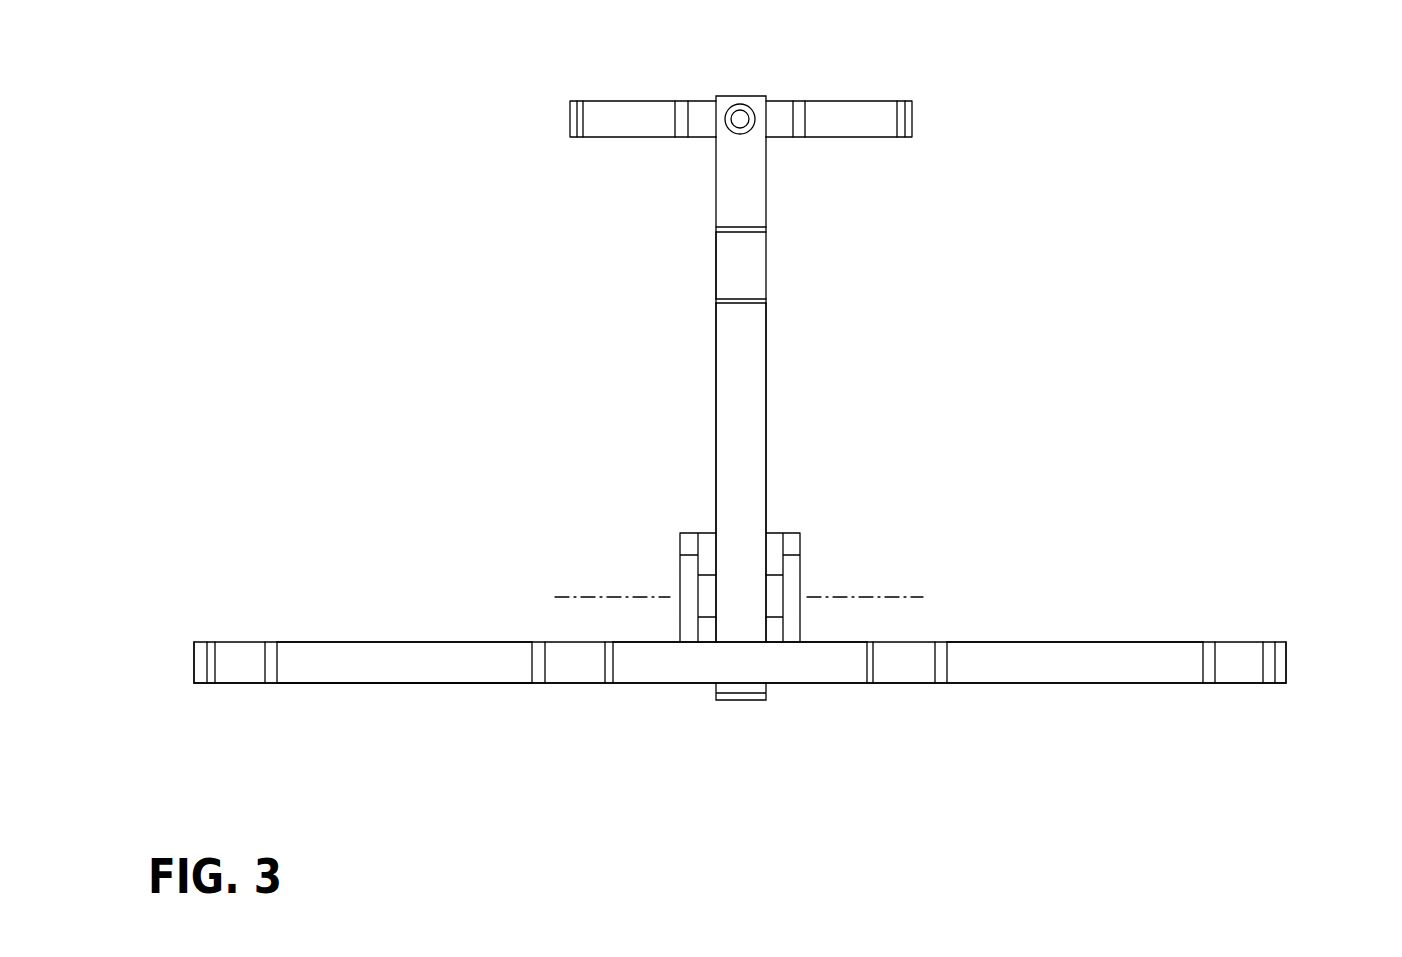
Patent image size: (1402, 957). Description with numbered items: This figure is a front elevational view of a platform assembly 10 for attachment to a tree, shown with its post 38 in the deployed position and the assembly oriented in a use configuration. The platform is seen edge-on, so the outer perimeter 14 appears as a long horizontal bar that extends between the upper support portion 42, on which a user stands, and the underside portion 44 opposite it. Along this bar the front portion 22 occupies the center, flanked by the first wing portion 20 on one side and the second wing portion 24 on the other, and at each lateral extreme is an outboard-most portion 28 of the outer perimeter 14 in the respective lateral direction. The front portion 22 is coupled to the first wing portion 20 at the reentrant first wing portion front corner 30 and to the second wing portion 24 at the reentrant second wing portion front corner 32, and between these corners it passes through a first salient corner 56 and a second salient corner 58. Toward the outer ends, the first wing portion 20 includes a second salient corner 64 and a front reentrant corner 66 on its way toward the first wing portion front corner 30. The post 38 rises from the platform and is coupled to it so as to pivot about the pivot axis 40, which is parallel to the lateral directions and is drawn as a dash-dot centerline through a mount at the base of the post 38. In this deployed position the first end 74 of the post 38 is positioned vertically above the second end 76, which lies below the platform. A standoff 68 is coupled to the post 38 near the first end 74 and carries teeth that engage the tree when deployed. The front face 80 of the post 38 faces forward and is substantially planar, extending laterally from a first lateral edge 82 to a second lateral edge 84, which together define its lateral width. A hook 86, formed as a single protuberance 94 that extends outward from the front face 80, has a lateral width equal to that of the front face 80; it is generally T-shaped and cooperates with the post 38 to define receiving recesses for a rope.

The platform assembly 10 is at (374, 383).
The outer perimeter 14 is at (1037, 682).
The first wing portion 20 is at (386, 667).
The front portion 22 is at (711, 665).
The second wing portion 24 is at (1098, 665).
The outboard-most portion 28 is at (194, 663).
The first wing portion front corner 30 is at (538, 668).
The second wing portion front corner 32 is at (942, 668).
The post 38 is at (745, 420).
The pivot axis 40 is at (590, 597).
The upper support portion 42 is at (402, 637).
The underside portion 44 is at (441, 686).
The first salient corner of the front portion 56 is at (605, 665).
The second salient corner of the front portion 58 is at (870, 665).
The second salient corner of the first wing portion 64 is at (213, 668).
The front reentrant corner of the first wing portion 66 is at (270, 668).
The standoff 68 is at (864, 96).
The first end 74 is at (742, 94).
The second end 76 is at (738, 700).
The front face 80 is at (746, 456).
The first lateral edge 82 is at (767, 482).
The second lateral edge 84 is at (716, 393).
The hook 86 is at (762, 250).
The protuberance 94 is at (735, 268).